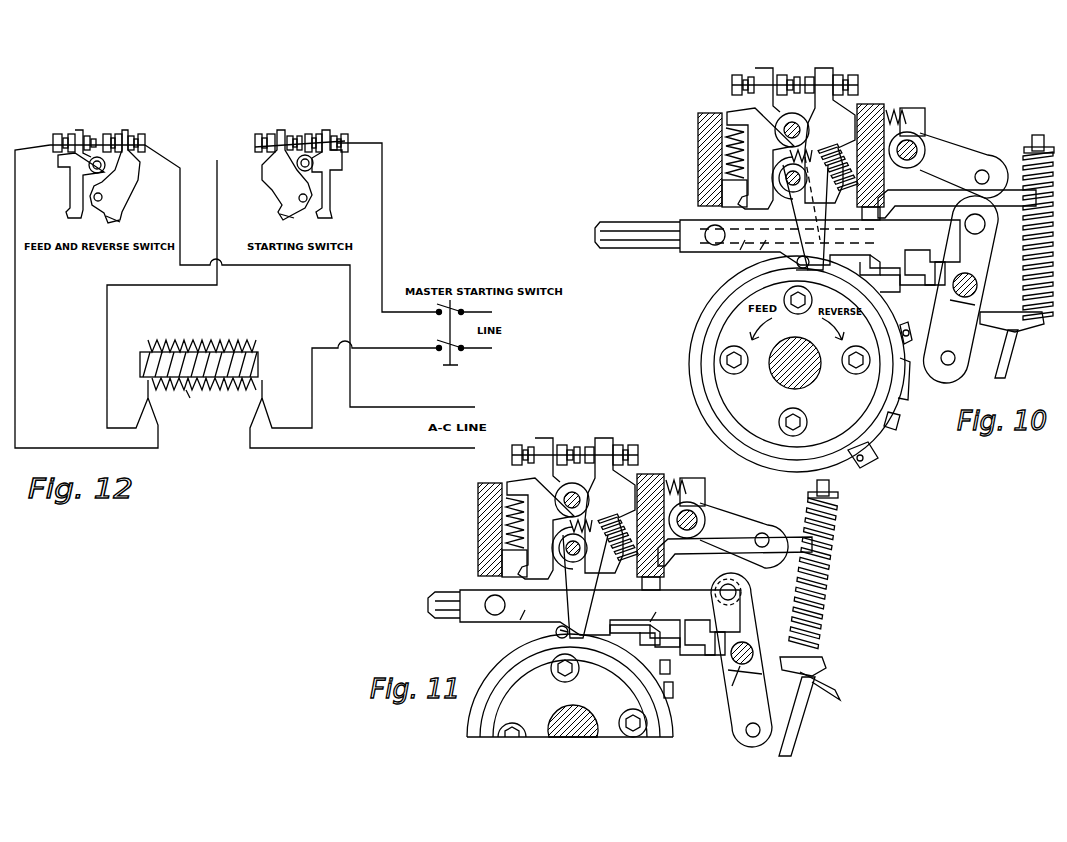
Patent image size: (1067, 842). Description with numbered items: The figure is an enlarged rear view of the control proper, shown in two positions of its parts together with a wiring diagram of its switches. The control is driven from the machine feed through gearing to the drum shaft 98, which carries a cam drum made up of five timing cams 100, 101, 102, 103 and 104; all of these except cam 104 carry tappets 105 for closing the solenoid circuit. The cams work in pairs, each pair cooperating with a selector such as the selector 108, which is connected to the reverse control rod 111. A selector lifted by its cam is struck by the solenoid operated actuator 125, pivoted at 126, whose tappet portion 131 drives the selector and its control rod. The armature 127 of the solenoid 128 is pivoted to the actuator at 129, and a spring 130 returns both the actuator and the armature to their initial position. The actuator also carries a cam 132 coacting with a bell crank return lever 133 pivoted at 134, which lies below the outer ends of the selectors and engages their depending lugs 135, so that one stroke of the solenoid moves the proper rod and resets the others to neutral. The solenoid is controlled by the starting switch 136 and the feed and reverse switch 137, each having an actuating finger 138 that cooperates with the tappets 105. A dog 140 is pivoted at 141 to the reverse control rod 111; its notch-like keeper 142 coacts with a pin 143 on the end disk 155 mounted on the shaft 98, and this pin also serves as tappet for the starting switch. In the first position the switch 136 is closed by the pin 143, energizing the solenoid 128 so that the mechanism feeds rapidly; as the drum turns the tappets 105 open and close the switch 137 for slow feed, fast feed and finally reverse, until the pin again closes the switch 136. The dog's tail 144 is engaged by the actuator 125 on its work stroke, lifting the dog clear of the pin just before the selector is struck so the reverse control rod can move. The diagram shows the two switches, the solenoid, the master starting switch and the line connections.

In FIG. 10, the drum shaft 98 is at (814, 372).
In FIG. 11, the drum shaft 98 is at (588, 708).
In FIG. 10, the timing cam 100 is at (862, 455).
In FIG. 10, the timing cam 101 is at (898, 418).
In FIG. 10, the timing cam 102 is at (902, 380).
In FIG. 11, the timing cam 102 is at (673, 686).
In FIG. 10, the timing cam 103 is at (895, 293).
In FIG. 11, the timing cam 103 is at (645, 633).
In FIG. 10, the timing cam 104 is at (852, 256).
In FIG. 11, the timing cam 104 is at (579, 634).
In FIG. 10, the tappet 105 is at (950, 329).
In FIG. 11, the tappet 105 is at (670, 667).
In FIG. 10, the selector 108 is at (742, 258).
In FIG. 11, the selector 108 is at (643, 607).
In FIG. 10, the reverse control rod 111 is at (626, 236).
In FIG. 11, the reverse control rod 111 is at (444, 590).
In FIG. 10, the solenoid operated actuator 125 is at (1003, 376).
In FIG. 11, the solenoid operated actuator 125 is at (762, 707).
In FIG. 11, the actuator pivot 126 is at (740, 668).
In FIG. 12, the armature 127 is at (258, 360).
In FIG. 12, the solenoid 128 is at (190, 398).
In FIG. 10, the armature pivot 129 is at (950, 364).
In FIG. 11, the armature pivot 129 is at (760, 731).
In FIG. 10, the spring 130 is at (1040, 135).
In FIG. 11, the spring 130 is at (790, 600).
In FIG. 10, the tappet portion 131 is at (961, 289).
In FIG. 11, the tappet portion 131 is at (741, 660).
In FIG. 10, the cam 132 is at (1028, 300).
In FIG. 11, the cam 132 is at (825, 566).
In FIG. 10, the bell crank return lever 133 is at (942, 148).
In FIG. 11, the bell crank return lever 133 is at (744, 524).
In FIG. 10, the return lever pivot 134 is at (912, 146).
In FIG. 11, the return lever pivot 134 is at (700, 499).
In FIG. 10, the depending lug 135 is at (913, 262).
In FIG. 11, the depending lug 135 is at (705, 642).
In FIG. 12, the starting switch 136 is at (326, 138).
In FIG. 10, the starting switch 136 is at (822, 78).
In FIG. 11, the starting switch 136 is at (572, 525).
In FIG. 12, the feed and reverse switch 137 is at (120, 140).
In FIG. 10, the actuating finger 138 is at (790, 238).
In FIG. 11, the actuating finger 138 is at (600, 622).
In FIG. 10, the dog 140 is at (740, 250).
In FIG. 11, the dog 140 is at (492, 634).
In FIG. 10, the dog pivot 141 is at (706, 241).
In FIG. 11, the dog pivot 141 is at (462, 620).
In FIG. 10, the keeper 142 is at (798, 266).
In FIG. 11, the keeper 142 is at (585, 615).
In FIG. 10, the pin 143 is at (800, 270).
In FIG. 11, the pin 143 is at (558, 632).
In FIG. 10, the tail 144 is at (950, 200).
In FIG. 11, the tail 144 is at (735, 532).
In FIG. 10, the end disk 155 is at (692, 360).
In FIG. 11, the end disk 155 is at (470, 722).